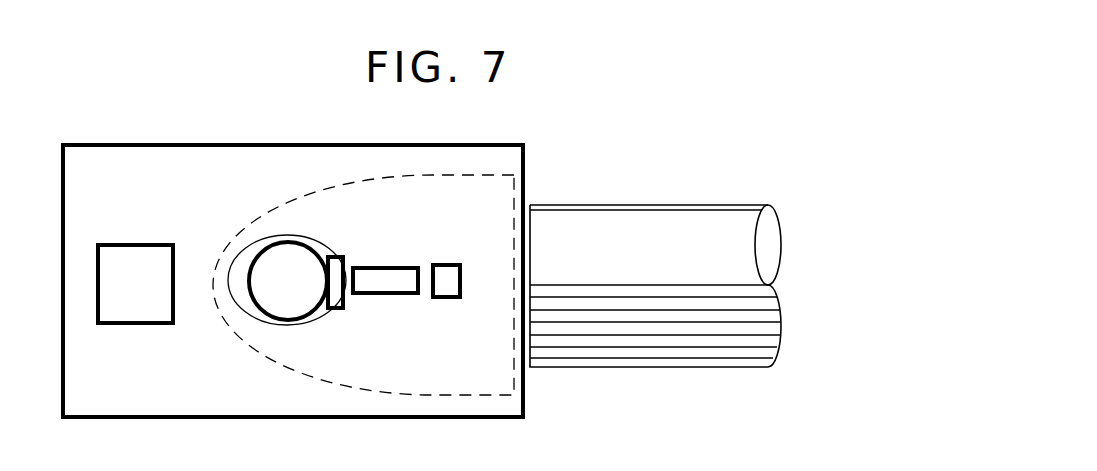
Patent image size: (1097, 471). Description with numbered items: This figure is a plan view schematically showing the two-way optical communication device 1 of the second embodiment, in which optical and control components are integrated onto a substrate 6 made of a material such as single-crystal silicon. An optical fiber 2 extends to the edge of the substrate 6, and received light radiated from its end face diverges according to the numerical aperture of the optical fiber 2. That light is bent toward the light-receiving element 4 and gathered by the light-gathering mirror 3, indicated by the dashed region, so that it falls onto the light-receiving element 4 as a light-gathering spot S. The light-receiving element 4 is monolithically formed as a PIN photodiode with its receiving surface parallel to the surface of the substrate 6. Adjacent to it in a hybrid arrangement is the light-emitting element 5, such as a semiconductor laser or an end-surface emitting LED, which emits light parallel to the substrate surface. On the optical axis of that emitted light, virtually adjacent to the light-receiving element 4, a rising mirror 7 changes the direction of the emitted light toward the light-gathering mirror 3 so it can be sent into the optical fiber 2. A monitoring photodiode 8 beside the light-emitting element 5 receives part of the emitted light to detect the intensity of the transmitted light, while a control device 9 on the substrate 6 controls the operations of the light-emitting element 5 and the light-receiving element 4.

The two-way optical communication device 1 is at (133, 90).
The optical fiber 2 is at (615, 226).
The light-gathering mirror 3 is at (470, 176).
The light-receiving element 4 is at (316, 312).
The light-emitting element 5 is at (390, 268).
The substrate 6 is at (215, 145).
The rising mirror 7 is at (331, 257).
The monitoring photodiode 8 is at (447, 297).
The control device 9 is at (173, 245).
The light-gathering spot S is at (307, 236).